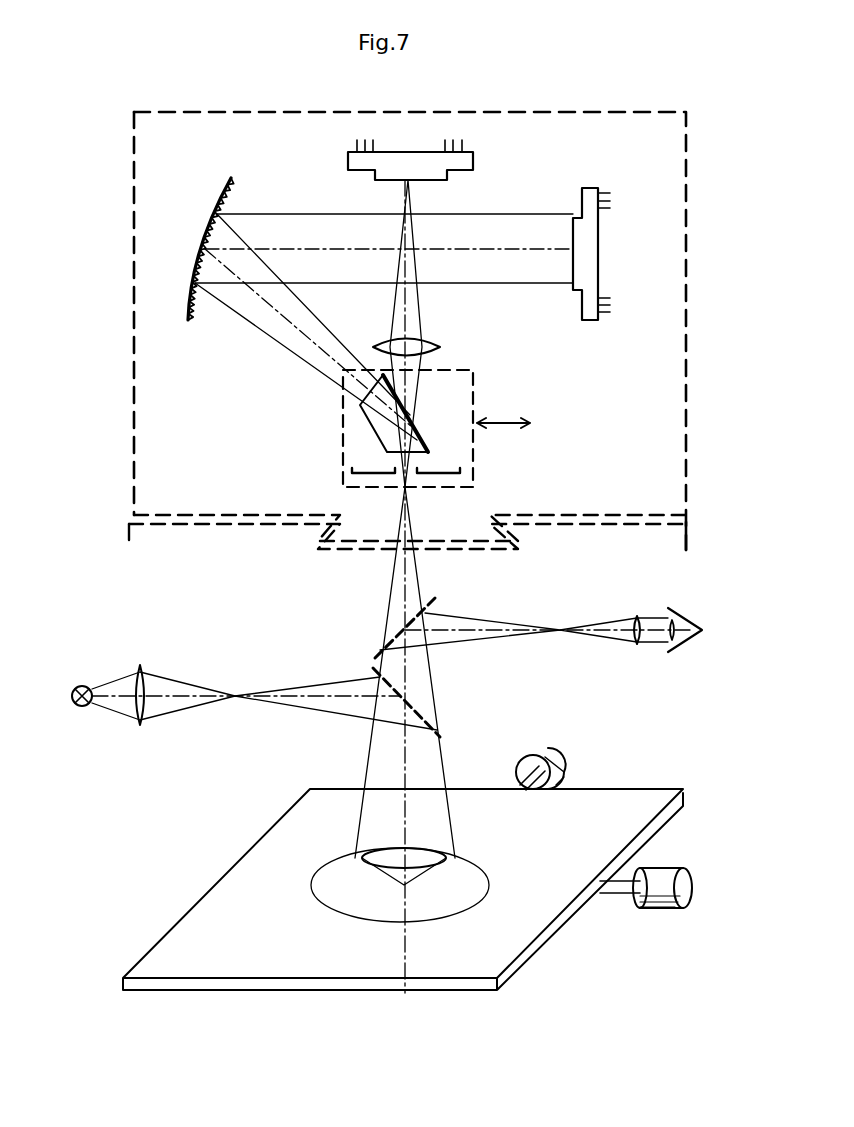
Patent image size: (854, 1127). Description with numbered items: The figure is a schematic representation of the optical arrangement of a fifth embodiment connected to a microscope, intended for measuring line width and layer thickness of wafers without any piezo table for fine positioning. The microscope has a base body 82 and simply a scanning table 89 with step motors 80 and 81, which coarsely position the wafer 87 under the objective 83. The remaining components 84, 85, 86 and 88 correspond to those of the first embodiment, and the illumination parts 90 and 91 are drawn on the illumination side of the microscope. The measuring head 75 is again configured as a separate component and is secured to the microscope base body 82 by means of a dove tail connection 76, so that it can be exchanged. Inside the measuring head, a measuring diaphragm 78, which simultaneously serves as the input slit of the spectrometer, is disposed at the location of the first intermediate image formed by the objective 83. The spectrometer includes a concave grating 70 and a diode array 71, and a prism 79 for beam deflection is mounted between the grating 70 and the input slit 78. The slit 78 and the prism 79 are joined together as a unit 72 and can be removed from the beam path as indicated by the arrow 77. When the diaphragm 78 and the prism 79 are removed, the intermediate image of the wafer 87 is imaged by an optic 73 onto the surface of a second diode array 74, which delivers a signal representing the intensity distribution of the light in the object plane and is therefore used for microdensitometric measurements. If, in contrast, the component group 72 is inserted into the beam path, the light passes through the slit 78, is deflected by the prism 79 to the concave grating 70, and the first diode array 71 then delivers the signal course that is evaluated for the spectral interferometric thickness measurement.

The concave grating 70 is at (187, 320).
The diode array 71 is at (585, 312).
The unit 72 is at (343, 458).
The optic 73 is at (425, 352).
The second diode array 74 is at (427, 162).
The measuring head 75 is at (690, 190).
The dove tail connection 76 is at (300, 540).
The arrow 77 is at (500, 428).
The measuring diaphragm 78 is at (447, 471).
The prism 79 is at (430, 427).
The step motor 80 is at (535, 755).
The step motor 81 is at (657, 893).
The base body 82 is at (686, 535).
The objective 83 is at (378, 855).
The optical component 84 is at (420, 710).
The optical component 85 is at (438, 600).
The optical component 86 is at (637, 645).
The wafer 87 is at (365, 900).
The optical component 88 is at (688, 640).
The scanning table 89 is at (512, 948).
The illumination lamp 90 is at (82, 706).
The condenser lens 91 is at (140, 665).